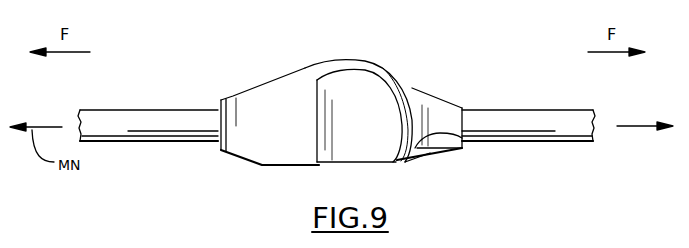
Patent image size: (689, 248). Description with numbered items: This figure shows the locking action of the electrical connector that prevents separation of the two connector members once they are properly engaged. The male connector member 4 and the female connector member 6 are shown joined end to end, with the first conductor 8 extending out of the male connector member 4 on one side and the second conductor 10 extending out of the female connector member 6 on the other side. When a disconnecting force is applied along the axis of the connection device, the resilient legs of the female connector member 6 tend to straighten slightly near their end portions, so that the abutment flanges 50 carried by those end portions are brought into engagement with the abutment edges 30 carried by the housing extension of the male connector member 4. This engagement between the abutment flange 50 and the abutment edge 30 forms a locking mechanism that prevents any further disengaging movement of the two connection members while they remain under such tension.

The second conductor 10 is at (166, 110).
The female connector member 6 is at (247, 79).
The male connector member 4 is at (478, 77).
The first conductor 8 is at (535, 110).
The abutment flange 50 is at (412, 155).
The abutment edge 30 is at (462, 138).